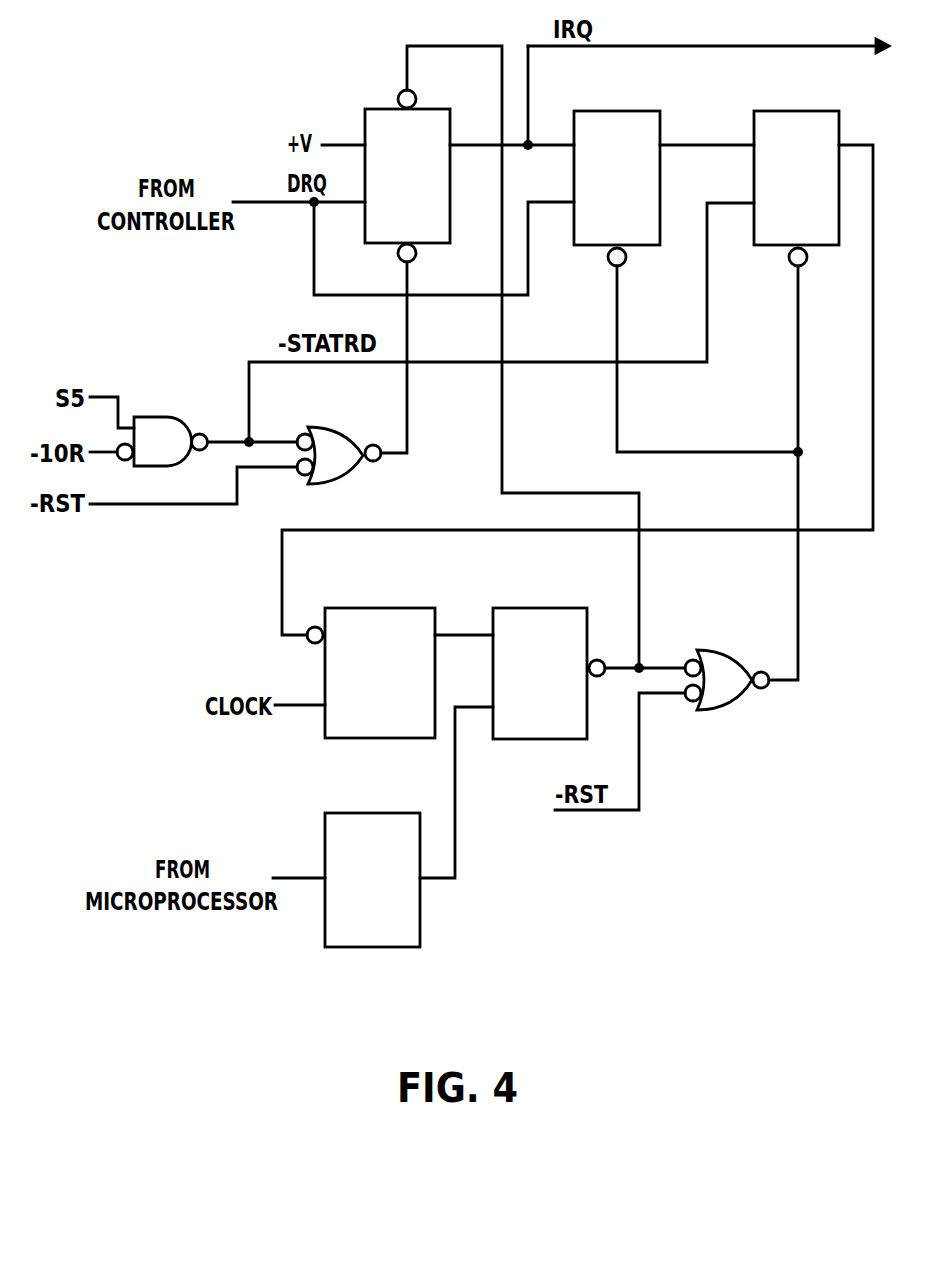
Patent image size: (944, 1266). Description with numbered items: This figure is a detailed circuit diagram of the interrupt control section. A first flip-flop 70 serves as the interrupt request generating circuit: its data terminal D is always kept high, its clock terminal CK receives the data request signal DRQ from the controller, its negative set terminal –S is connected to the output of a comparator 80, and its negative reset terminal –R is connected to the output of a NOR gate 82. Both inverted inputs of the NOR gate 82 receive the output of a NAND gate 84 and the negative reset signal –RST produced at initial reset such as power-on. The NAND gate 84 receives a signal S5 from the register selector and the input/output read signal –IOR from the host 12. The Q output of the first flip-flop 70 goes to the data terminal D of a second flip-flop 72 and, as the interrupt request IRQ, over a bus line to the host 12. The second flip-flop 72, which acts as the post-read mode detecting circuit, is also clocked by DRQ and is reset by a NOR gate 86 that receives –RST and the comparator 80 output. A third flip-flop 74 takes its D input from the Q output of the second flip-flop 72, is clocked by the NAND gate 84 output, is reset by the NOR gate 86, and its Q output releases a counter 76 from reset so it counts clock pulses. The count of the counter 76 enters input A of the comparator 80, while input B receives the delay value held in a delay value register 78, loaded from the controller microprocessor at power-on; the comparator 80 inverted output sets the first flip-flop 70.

The host 12 is at (708, 34).
The first flip-flop 70 is at (382, 108).
The second flip-flop 72 is at (612, 110).
The third flip-flop 74 is at (795, 110).
The counter 76 is at (378, 607).
The delay value register 78 is at (372, 813).
The comparator 80 is at (545, 607).
The NOR gate 82 is at (337, 427).
The NAND gate 84 is at (173, 417).
The NOR gate 86 is at (718, 652).